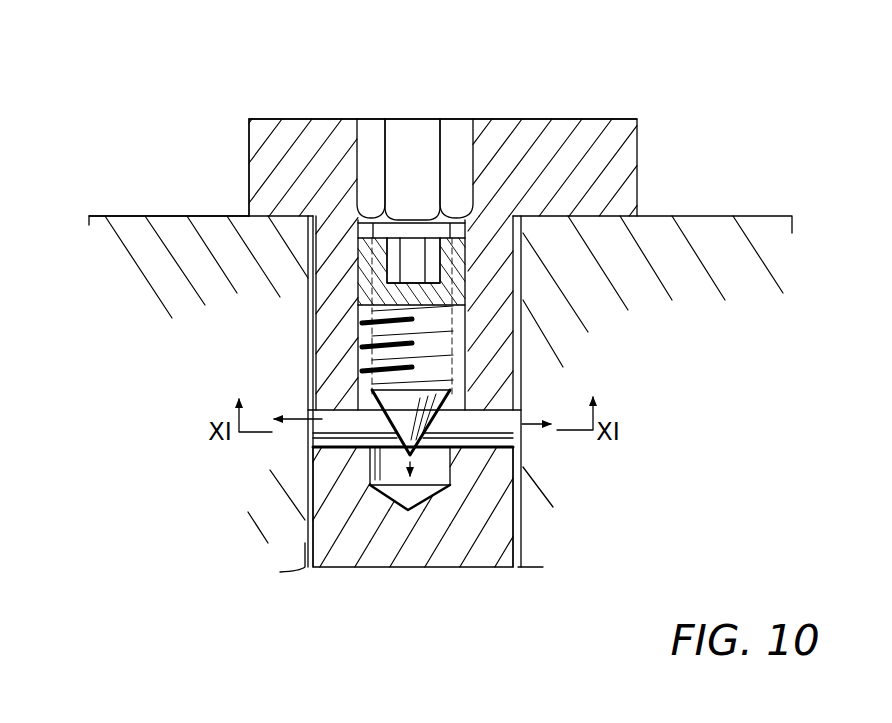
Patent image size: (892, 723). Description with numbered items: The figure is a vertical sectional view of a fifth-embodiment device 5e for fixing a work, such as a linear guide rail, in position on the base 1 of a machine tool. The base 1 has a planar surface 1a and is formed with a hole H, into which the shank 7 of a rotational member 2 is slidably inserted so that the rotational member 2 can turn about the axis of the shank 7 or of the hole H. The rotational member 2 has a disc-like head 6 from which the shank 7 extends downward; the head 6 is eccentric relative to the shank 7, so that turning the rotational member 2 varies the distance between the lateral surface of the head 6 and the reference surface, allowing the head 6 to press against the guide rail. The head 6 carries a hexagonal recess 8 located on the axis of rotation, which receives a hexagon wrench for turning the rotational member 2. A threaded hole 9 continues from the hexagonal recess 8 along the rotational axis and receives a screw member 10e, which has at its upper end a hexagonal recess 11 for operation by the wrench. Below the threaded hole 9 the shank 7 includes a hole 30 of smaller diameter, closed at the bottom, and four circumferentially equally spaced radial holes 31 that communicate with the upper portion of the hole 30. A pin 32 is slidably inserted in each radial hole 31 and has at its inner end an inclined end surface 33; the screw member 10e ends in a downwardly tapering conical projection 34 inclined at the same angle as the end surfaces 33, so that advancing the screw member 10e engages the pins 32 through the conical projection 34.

The base 1 is at (697, 237).
The planar surface 1a is at (135, 212).
The rotational member 2 is at (328, 115).
The device 5e is at (222, 176).
The head 6 is at (618, 130).
The shank 7 is at (309, 339).
The hexagonal recess 8 is at (472, 167).
The threaded hole 9 is at (467, 320).
The screw member 10e is at (360, 385).
The hexagonal recess 11 is at (390, 266).
The hole 30 is at (473, 515).
The radial holes 31 is at (309, 487).
The pin 32 is at (348, 545).
The end surface 33 is at (375, 448).
The conical projection 34 is at (445, 390).
The hole H is at (522, 508).